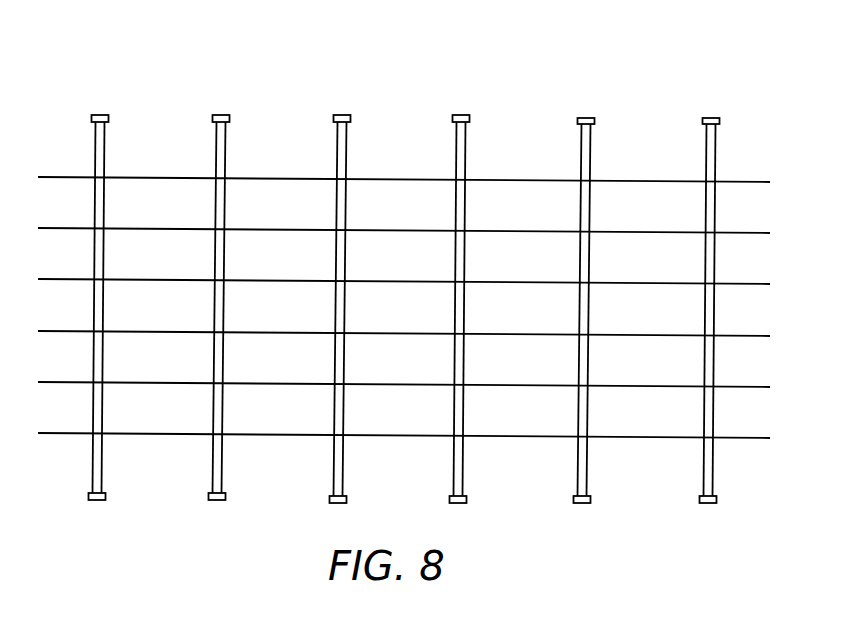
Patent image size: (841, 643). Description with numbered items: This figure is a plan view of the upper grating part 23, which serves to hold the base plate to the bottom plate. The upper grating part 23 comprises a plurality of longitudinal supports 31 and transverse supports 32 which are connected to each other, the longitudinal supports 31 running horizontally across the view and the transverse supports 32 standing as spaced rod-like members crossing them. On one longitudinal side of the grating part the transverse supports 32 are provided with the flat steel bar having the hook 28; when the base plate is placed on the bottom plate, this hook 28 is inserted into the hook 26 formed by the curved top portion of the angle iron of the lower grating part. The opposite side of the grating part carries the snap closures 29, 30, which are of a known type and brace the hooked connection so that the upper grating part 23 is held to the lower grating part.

The upper grating part 23 is at (404, 293).
The hook 26 is at (406, 88).
The additional hook 28 is at (112, 104).
The snap closure 29 is at (403, 513).
The snap closure 30 is at (114, 508).
The longitudinal supports 31 is at (420, 180).
The transverse supports 32 is at (218, 149).